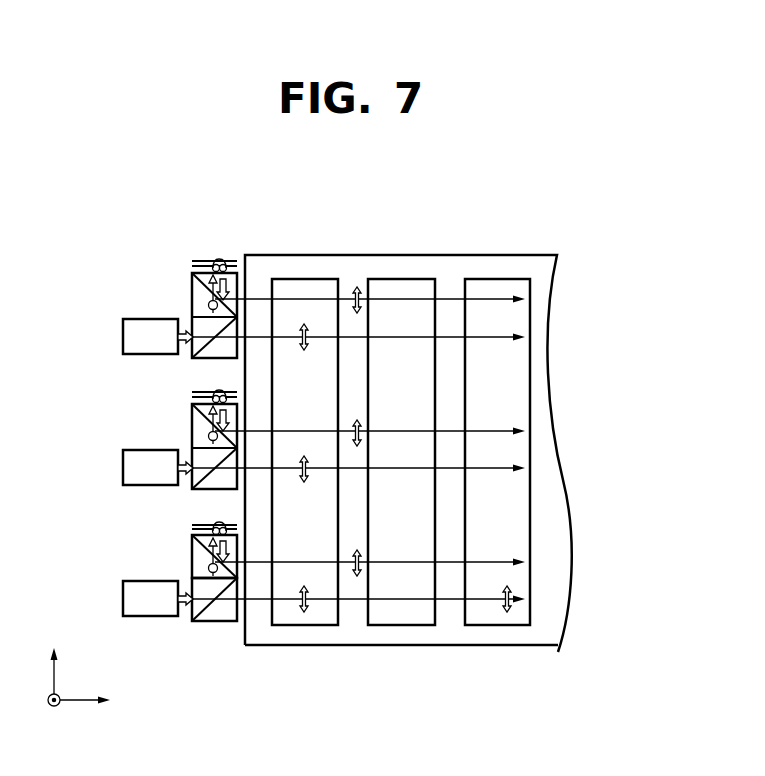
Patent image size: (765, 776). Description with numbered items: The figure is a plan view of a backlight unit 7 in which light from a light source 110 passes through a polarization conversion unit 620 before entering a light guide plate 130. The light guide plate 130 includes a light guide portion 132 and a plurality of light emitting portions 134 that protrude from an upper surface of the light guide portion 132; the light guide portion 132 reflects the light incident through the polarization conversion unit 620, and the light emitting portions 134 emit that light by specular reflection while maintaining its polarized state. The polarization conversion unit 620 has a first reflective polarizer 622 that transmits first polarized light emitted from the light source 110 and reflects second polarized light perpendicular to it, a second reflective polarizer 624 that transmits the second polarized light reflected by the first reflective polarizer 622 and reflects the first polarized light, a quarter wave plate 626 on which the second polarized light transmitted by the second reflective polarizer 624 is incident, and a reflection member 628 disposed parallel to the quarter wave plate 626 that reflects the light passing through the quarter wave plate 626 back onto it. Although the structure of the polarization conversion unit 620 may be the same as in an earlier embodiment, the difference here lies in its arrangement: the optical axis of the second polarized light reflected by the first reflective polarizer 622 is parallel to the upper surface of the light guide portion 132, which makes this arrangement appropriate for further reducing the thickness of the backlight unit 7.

The backlight unit 7 is at (598, 219).
The light source 110 is at (150, 617).
The light guide plate 130 is at (508, 197).
The light guide portion 132 is at (440, 272).
The light emitting portions 134 is at (498, 285).
The polarization conversion unit 620 is at (192, 636).
The first reflective polarizer 622 is at (203, 588).
The second reflective polarizer 624 is at (203, 555).
The quarter wave plate 626 is at (198, 525).
The reflection member 628 is at (224, 524).